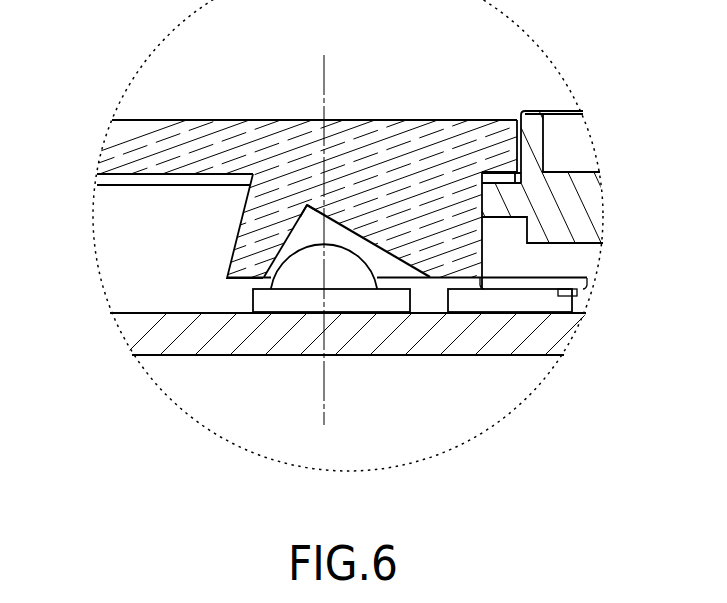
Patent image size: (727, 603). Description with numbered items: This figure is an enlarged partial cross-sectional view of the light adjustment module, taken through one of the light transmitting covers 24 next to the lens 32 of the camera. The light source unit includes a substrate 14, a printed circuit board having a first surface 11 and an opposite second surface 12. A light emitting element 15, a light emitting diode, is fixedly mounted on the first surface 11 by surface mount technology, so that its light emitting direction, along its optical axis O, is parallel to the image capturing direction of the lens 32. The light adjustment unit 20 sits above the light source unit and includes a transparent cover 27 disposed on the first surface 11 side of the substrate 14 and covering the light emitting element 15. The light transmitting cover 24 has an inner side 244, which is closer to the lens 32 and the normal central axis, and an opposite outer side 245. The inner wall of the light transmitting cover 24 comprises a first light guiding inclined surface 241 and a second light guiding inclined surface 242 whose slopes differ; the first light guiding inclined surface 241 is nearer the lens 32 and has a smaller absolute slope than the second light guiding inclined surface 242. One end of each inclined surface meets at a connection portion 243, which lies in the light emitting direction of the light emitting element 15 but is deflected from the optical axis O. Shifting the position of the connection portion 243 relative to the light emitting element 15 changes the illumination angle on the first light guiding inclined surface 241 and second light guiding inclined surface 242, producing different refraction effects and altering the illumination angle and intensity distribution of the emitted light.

The first surface 11 is at (158, 312).
The second surface 12 is at (202, 356).
The substrate 14 is at (207, 330).
The light emitting element 15 is at (340, 272).
The light adjustment unit 20 is at (225, 112).
The light transmitting cover 24 is at (458, 250).
The first light guiding inclined surface 241 is at (407, 263).
The second light guiding inclined surface 242 is at (278, 272).
The connection portion 243 is at (307, 205).
The inner side 244 is at (482, 242).
The outer side 245 is at (257, 218).
The transparent cover 27 is at (155, 120).
The lens 32 is at (530, 133).
The optical axis O is at (324, 76).